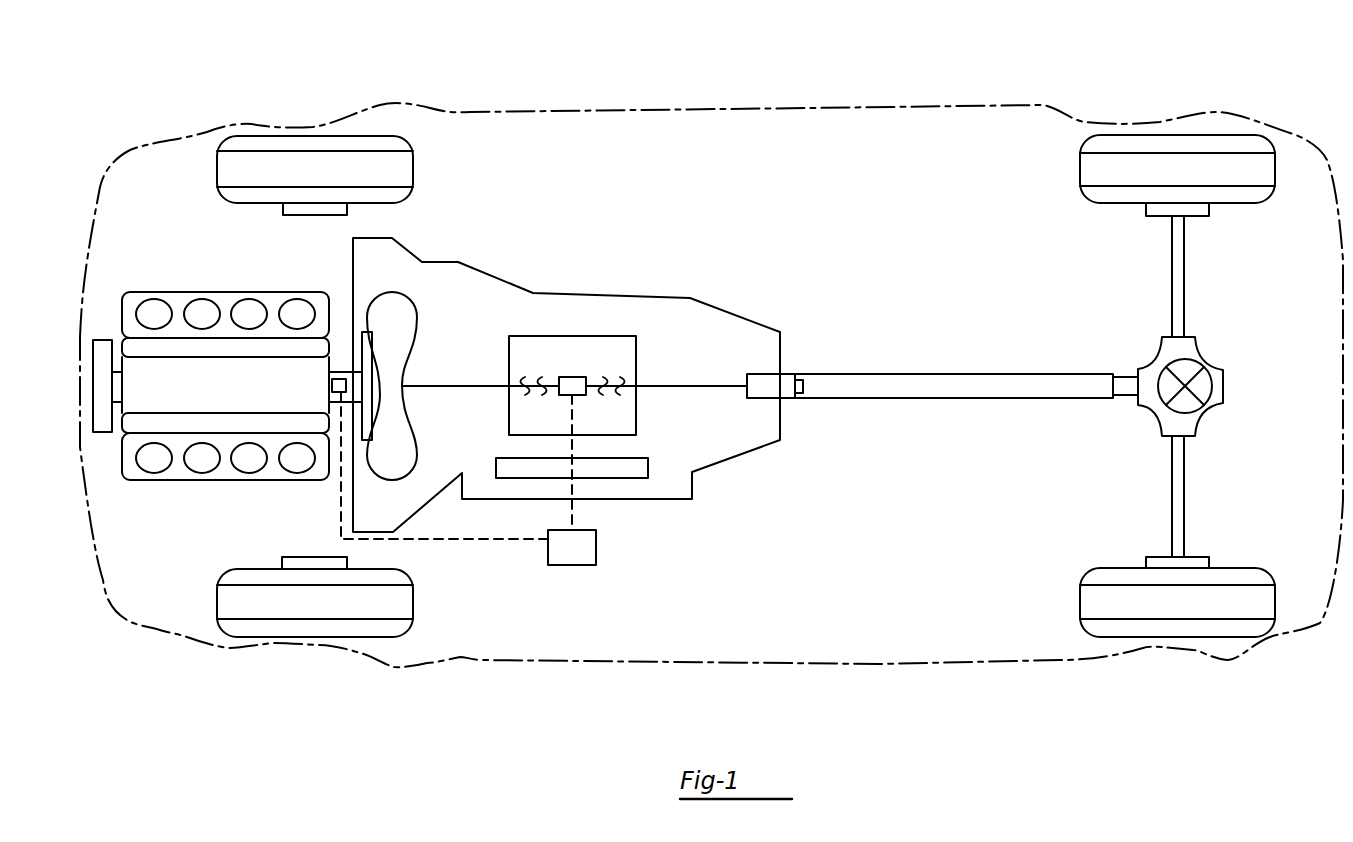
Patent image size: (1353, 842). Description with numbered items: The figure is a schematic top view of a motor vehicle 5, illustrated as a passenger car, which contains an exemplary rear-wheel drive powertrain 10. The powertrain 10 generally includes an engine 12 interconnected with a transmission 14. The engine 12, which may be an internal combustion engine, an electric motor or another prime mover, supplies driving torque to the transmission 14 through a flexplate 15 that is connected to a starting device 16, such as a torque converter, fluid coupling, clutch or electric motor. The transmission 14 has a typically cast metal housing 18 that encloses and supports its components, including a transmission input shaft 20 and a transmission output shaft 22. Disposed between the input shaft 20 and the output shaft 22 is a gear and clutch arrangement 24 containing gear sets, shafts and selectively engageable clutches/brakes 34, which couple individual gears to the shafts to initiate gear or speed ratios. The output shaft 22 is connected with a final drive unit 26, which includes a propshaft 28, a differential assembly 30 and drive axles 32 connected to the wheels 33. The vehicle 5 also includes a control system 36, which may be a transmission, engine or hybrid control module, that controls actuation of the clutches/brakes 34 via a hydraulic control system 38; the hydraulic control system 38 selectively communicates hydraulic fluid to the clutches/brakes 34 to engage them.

The motor vehicle 5 is at (826, 106).
The powertrain 10 is at (766, 224).
The engine 12 is at (168, 401).
The transmission 14 is at (566, 388).
The flexplate 15 is at (358, 330).
The starting device 16 is at (412, 303).
The housing 18 is at (748, 318).
The transmission input shaft 20 is at (415, 377).
The transmission output shaft 22 is at (683, 383).
The gear and clutch arrangement 24 is at (572, 342).
The final drive unit 26 is at (1066, 342).
The propshaft 28 is at (920, 373).
The differential assembly 30 is at (1210, 357).
The drive axles 32 is at (1180, 287).
The wheels 33 is at (1080, 170).
The clutches/brakes 34 is at (578, 377).
The control system 36 is at (596, 558).
The hydraulic control system 38 is at (627, 478).